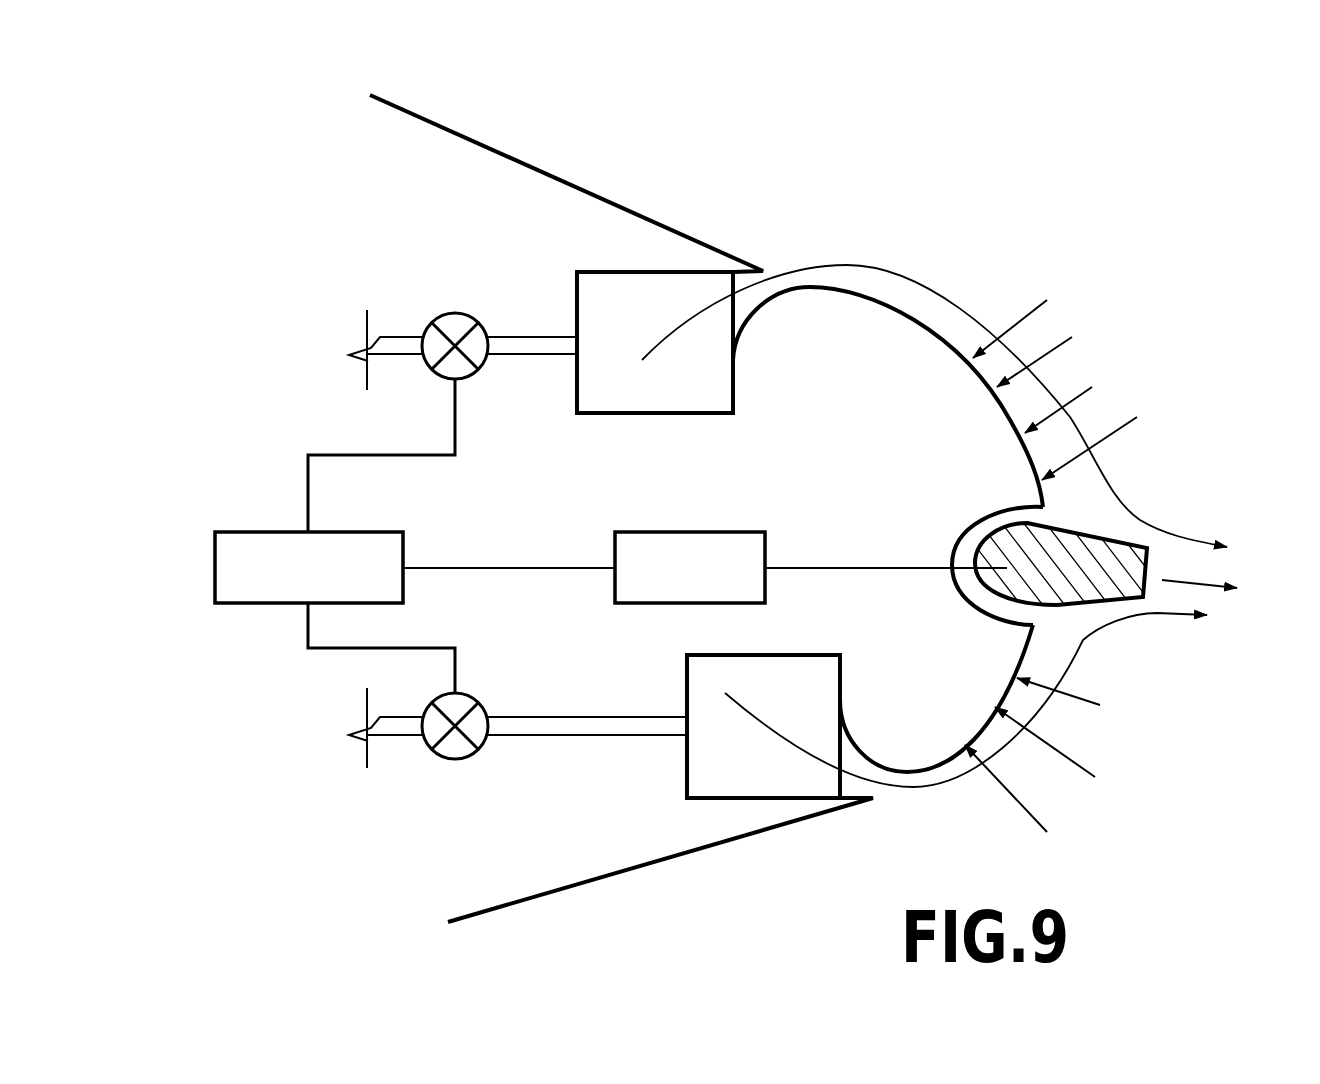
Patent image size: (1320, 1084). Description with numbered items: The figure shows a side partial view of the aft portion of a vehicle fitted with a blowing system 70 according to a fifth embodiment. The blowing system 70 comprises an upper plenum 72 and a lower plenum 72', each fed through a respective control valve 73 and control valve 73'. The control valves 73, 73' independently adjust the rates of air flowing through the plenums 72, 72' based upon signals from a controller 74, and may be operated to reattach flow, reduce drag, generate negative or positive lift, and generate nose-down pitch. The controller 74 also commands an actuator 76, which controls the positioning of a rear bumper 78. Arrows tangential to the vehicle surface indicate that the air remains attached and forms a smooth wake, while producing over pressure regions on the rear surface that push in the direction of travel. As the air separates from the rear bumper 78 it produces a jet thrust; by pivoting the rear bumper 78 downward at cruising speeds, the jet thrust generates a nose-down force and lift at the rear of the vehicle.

The blowing system 70 is at (668, 168).
The upper plenum 72 is at (566, 254).
The lower plenum 72' is at (660, 790).
The control valve 73 is at (463, 315).
The control valve 73' is at (518, 771).
The controller 74 is at (248, 532).
The actuator 76 is at (614, 603).
The rear bumper 78 is at (1108, 602).